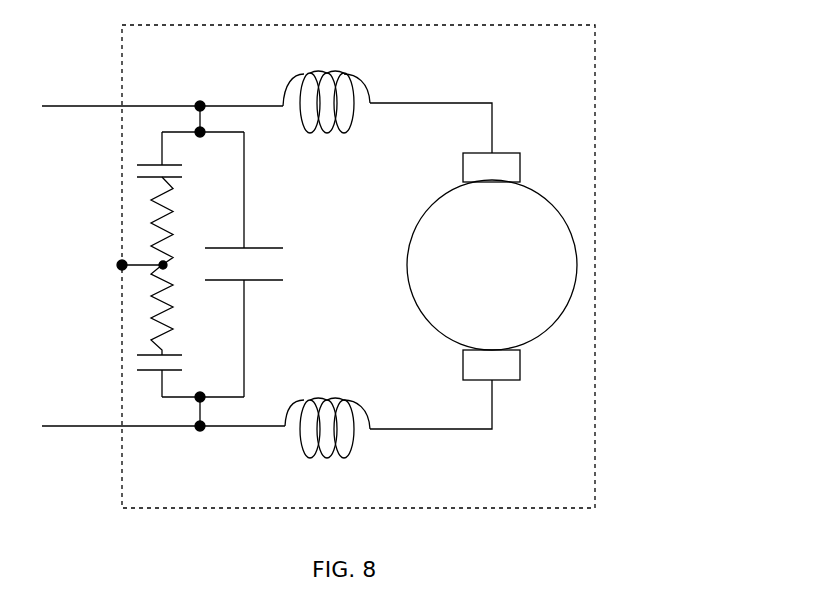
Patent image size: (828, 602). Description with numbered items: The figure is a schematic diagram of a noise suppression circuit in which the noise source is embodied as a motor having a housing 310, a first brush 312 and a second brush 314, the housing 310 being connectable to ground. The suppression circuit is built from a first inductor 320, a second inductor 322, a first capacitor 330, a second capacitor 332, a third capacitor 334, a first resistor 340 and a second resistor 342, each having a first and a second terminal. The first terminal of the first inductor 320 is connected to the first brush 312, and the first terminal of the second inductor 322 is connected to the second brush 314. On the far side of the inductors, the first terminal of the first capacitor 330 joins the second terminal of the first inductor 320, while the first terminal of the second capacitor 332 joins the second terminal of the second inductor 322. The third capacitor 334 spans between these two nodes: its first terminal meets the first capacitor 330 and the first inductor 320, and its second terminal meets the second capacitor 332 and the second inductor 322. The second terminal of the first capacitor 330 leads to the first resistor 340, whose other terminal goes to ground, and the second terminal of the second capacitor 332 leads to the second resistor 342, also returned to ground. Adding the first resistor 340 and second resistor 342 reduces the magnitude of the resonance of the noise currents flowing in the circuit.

The housing 310 is at (598, 80).
The first brush 312 is at (503, 165).
The second brush 314 is at (503, 367).
The first inductor 320 is at (368, 82).
The second inductor 322 is at (355, 437).
The first capacitor 330 is at (145, 165).
The second capacitor 332 is at (145, 361).
The third capacitor 334 is at (267, 248).
The first resistor 340 is at (150, 229).
The second resistor 342 is at (150, 315).